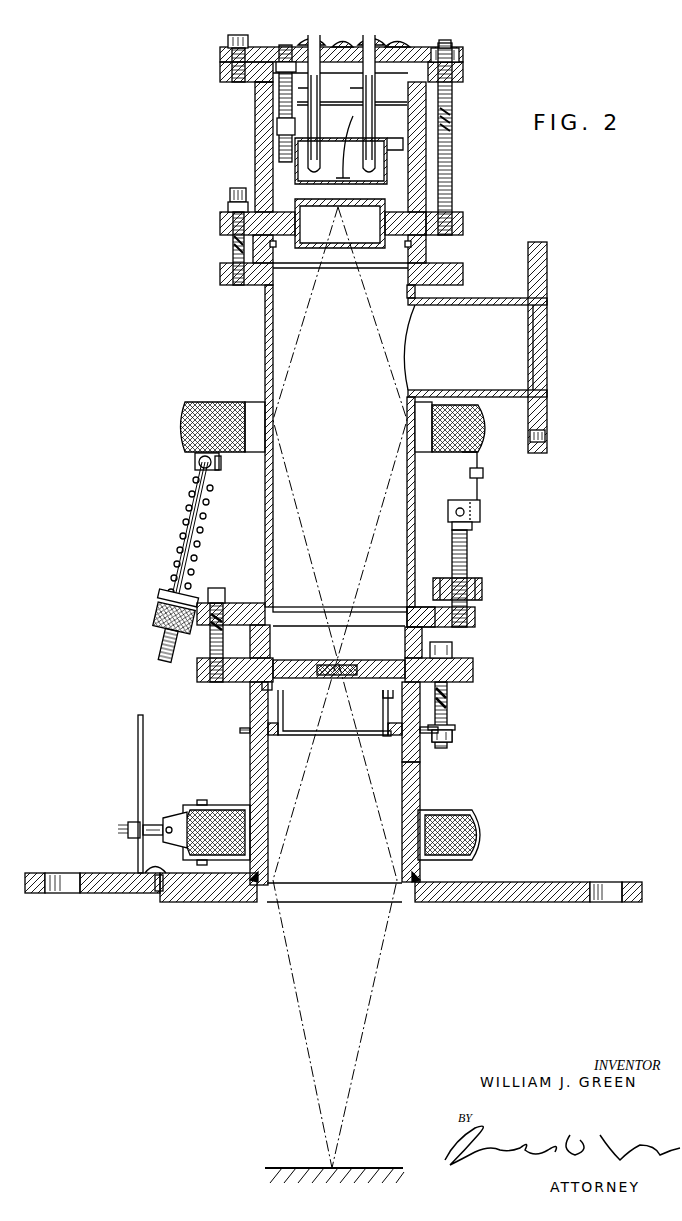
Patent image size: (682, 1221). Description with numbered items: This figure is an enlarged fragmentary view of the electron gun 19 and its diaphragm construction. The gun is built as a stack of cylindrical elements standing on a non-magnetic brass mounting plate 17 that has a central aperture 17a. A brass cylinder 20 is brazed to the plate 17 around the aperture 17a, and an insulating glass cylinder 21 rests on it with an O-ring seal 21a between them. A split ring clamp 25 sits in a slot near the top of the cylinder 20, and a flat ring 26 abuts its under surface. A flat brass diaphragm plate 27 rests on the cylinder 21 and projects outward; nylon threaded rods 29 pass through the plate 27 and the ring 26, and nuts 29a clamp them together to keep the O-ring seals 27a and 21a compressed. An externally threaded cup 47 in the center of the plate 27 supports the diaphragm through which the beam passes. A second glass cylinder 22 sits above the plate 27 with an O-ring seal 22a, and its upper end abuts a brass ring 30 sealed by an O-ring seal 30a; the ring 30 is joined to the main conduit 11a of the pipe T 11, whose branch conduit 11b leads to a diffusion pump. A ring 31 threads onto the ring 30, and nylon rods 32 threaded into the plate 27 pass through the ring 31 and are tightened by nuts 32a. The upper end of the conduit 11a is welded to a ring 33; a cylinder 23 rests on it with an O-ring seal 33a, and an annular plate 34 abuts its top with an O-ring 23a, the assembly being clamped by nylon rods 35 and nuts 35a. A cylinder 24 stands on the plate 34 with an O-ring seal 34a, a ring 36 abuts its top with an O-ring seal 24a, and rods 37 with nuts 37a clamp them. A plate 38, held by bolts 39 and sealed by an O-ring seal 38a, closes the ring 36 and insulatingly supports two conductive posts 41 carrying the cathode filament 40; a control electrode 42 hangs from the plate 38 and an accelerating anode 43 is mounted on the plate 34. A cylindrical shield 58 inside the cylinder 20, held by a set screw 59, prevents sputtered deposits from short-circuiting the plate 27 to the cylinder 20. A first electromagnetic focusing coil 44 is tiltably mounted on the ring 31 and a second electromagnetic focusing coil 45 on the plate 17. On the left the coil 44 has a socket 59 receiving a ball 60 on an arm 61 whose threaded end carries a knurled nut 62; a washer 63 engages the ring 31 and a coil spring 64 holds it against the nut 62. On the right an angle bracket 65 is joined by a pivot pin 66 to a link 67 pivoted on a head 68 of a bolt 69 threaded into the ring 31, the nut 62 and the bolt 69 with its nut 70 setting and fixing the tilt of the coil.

The pipe T 11 is at (470, 292).
The main conduit 11a is at (265, 510).
The branch conduit 11b is at (480, 306).
The mounting plate 17 is at (497, 902).
The central aperture 17a is at (412, 900).
The electron gun 19 is at (562, 466).
The cylinder 20 is at (420, 781).
The cylinder 21 is at (252, 708).
The O-ring seal 21a is at (268, 736).
The cylinder 22 is at (424, 644).
The O-ring seal 22a is at (270, 637).
The cylinder 23 is at (426, 243).
The O-ring 23a is at (277, 245).
The cylinder 24 is at (255, 138).
The O-ring seal 24a is at (262, 92).
The split ring clamp 25 is at (445, 724).
The flat ring 26 is at (452, 736).
The diaphragm plate 27 is at (473, 670).
The O-ring seal 27a is at (264, 687).
The threaded rod 29 is at (448, 696).
The nut 29a is at (452, 649).
The brass ring 30 is at (417, 608).
The O-ring seal 30a is at (410, 611).
The ring 31 is at (475, 615).
The threaded nylon rod 32 is at (210, 650).
The nut 32a is at (220, 596).
The ring 33 is at (220, 277).
The O-ring seal 33a is at (412, 247).
The annular plate 34 is at (220, 220).
The O-ring seal 34a is at (412, 215).
The threaded nylon rod 35 is at (233, 260).
The nut 35a is at (230, 195).
The ring 36 is at (463, 74).
The threaded nylon rod 37 is at (452, 136).
The nut 37a is at (459, 55).
The plate 38 is at (222, 53).
The O-ring seal 38a is at (446, 47).
The bolt 39 is at (228, 38).
The cathode filament 40 is at (342, 140).
The electrically conductive post 41 is at (306, 37).
The control electrode 42 is at (387, 161).
The accelerating anode 43 is at (372, 243).
The first electromagnetic focusing coil 44 is at (478, 452).
The second electromagnetic focusing coil 45 is at (484, 830).
The externally threaded cup 47 is at (350, 661).
The shield 58 is at (386, 698).
The socket 59 is at (216, 464).
The ball 60 is at (198, 460).
The arm 61 is at (192, 488).
The knurled nut 62 is at (156, 610).
The washer 63 is at (165, 596).
The coil spring 64 is at (200, 541).
The angle bracket 65 is at (470, 467).
The pivot pin 66 is at (484, 477).
The link 67 is at (482, 512).
The head 68 is at (452, 526).
The bolt 69 is at (468, 556).
The nut 70 is at (482, 588).